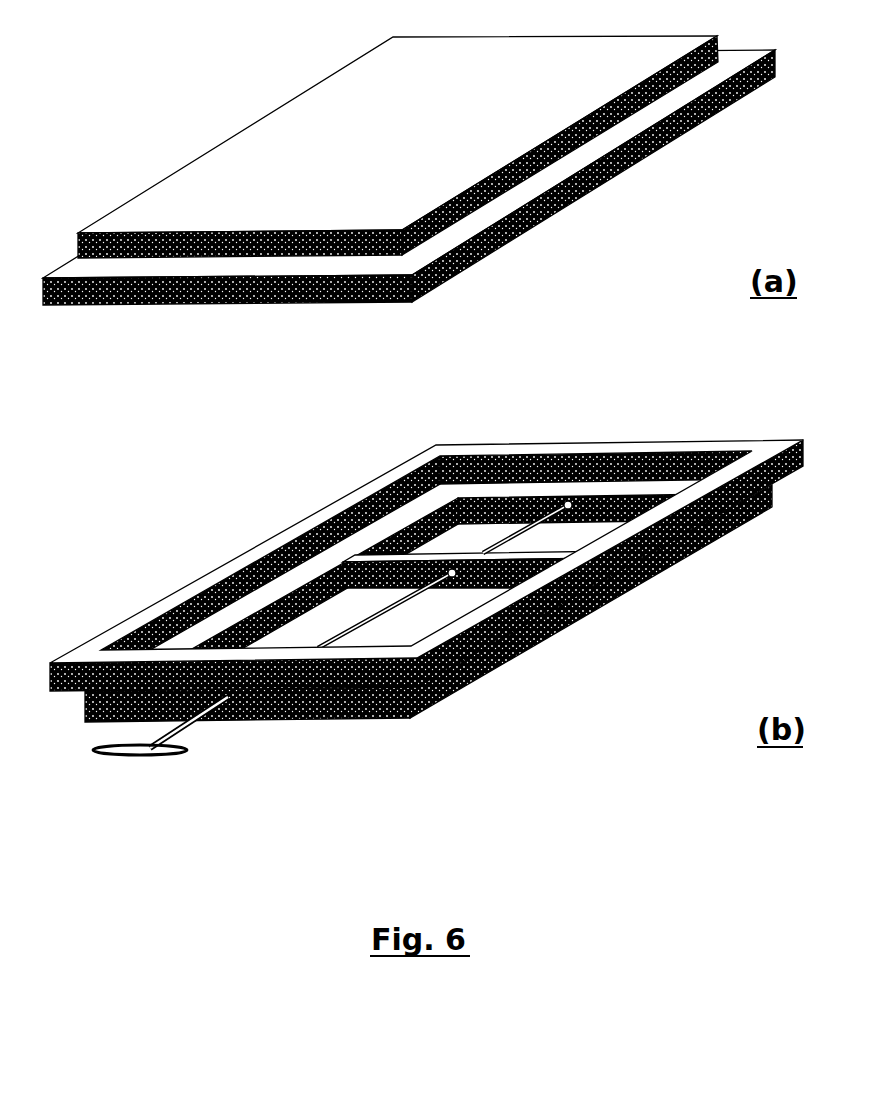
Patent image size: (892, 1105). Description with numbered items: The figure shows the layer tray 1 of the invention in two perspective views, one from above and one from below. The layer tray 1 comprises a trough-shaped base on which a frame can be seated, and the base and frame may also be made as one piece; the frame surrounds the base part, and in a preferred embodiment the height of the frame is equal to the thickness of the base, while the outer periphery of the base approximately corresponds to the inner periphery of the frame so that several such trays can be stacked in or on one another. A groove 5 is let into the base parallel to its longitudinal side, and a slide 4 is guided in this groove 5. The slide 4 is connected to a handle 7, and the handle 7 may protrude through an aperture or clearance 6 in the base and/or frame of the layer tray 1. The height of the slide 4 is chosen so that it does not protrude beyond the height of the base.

The layer tray 1 is at (409, 206).
The slide 4 is at (452, 569).
The groove 5 is at (393, 607).
The aperture or clearance 6 is at (229, 699).
The handle 7 is at (188, 731).